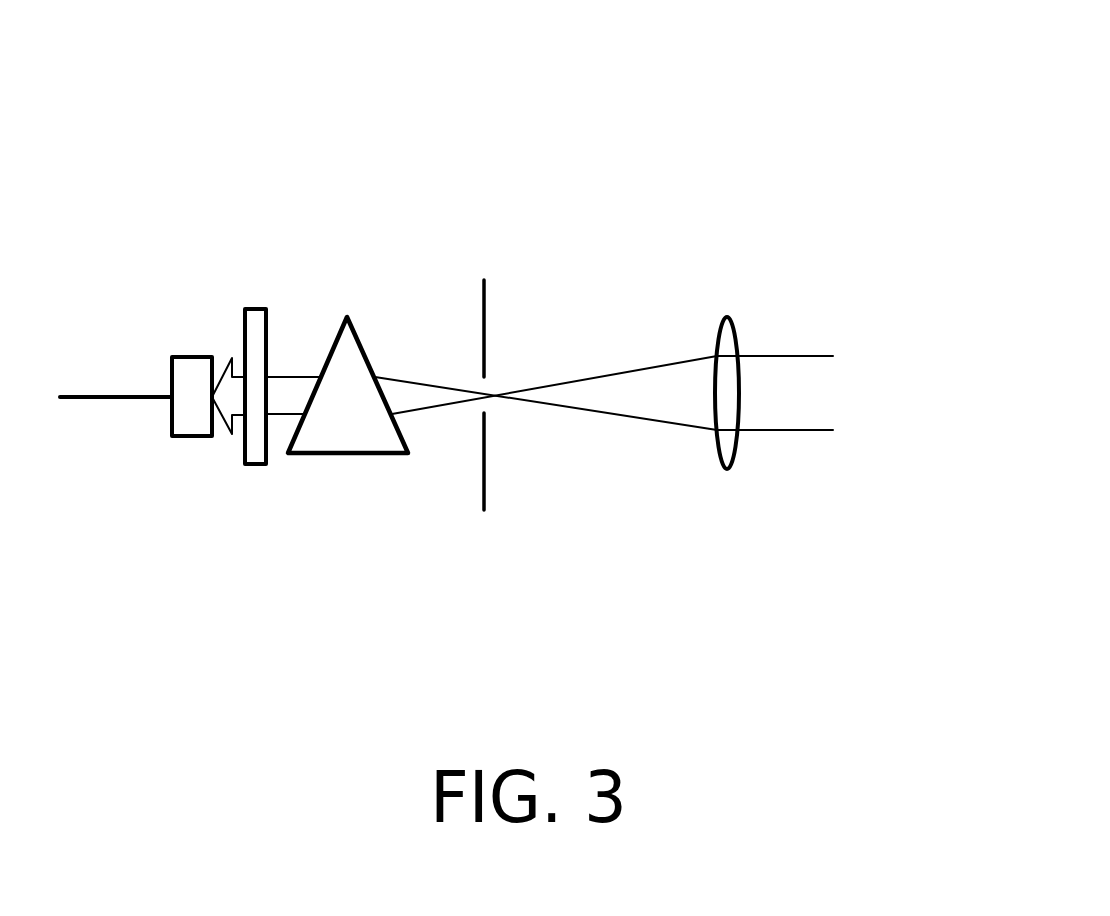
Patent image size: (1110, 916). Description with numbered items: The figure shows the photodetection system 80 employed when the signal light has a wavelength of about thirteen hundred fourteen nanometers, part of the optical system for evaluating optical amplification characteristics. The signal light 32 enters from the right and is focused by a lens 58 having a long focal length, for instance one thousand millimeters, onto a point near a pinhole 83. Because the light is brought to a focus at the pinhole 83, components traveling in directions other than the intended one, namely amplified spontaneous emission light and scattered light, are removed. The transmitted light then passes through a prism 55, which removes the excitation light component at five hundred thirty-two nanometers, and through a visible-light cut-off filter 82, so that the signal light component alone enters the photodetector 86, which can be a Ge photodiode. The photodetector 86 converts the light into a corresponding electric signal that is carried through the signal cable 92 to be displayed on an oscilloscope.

The photodetection system 80 is at (673, 165).
The signal cable 92 is at (98, 397).
The photodetector 86 is at (187, 372).
The visible-light cut-off filter 82 is at (253, 310).
The prism 55 is at (348, 318).
The pinhole 83 is at (488, 372).
The lens 58 is at (730, 320).
The signal light 32 is at (782, 396).